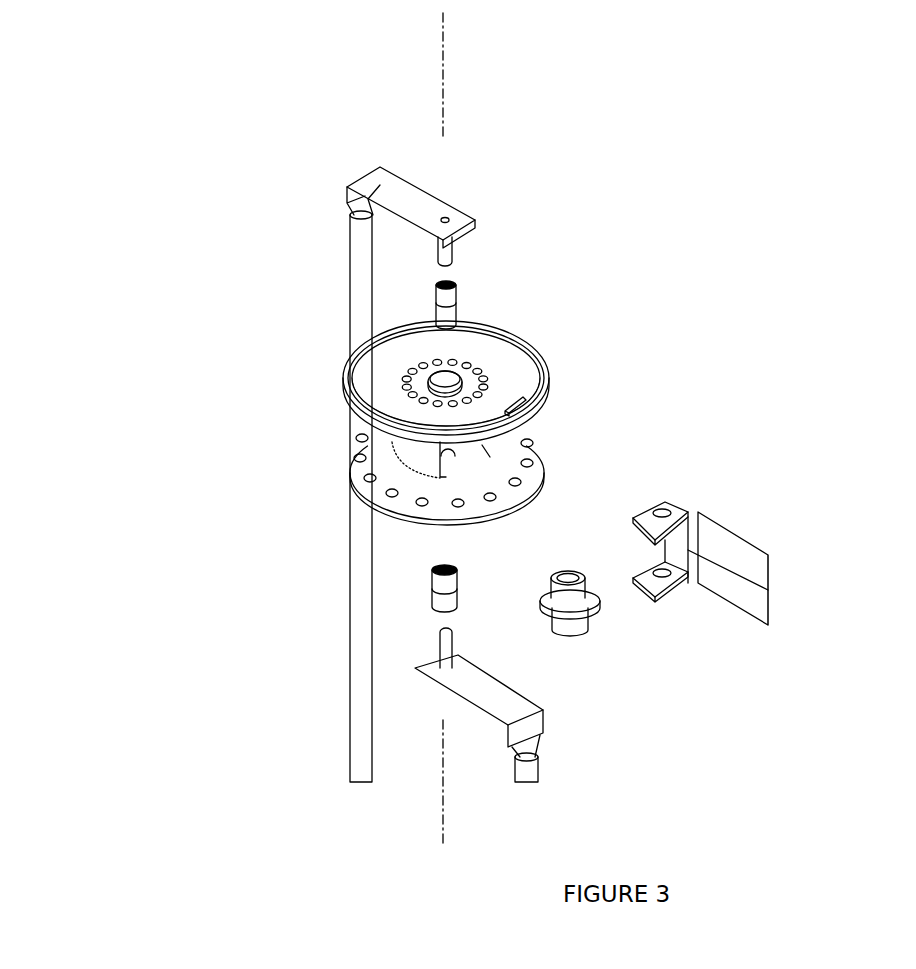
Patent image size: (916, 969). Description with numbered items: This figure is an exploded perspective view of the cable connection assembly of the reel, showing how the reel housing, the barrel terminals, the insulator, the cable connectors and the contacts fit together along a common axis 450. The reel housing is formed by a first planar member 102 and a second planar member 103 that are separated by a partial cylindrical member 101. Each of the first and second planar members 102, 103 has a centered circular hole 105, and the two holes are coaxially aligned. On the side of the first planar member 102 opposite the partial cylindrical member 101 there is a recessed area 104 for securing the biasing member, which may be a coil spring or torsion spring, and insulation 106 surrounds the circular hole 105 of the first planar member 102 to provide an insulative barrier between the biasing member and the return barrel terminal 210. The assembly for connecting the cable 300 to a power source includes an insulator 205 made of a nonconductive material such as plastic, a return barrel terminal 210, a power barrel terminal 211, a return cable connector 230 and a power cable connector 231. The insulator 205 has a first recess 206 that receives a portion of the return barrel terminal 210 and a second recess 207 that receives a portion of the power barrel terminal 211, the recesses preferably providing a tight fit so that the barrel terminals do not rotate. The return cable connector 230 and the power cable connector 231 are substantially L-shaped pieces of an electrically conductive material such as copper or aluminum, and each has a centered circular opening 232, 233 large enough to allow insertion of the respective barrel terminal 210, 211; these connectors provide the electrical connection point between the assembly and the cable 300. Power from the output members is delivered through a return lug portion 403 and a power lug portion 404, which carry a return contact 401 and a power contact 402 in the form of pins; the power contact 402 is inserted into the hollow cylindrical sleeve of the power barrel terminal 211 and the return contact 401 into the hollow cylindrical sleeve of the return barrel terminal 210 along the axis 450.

The partial cylindrical member 101 is at (418, 447).
The first planar member 102 is at (349, 368).
The second planar member 103 is at (350, 462).
The recessed area 104 is at (513, 363).
The centered circular hole 105 is at (455, 457).
The insulation 106 is at (472, 368).
The insulator 205 is at (573, 602).
The first recess 206 is at (570, 575).
The second recess 207 is at (573, 640).
The return barrel terminal 210 is at (457, 293).
The power barrel terminal 211 is at (428, 579).
The return cable connector 230 is at (726, 581).
The power cable connector 231 is at (683, 582).
The centered circular opening 232 is at (668, 508).
The centered circular opening 233 is at (667, 580).
The cable 300 is at (773, 578).
The return contact 401 is at (456, 248).
The power contact 402 is at (443, 650).
The return lug portion 403 is at (408, 190).
The power lug portion 404 is at (480, 697).
The axis 450 is at (455, 83).